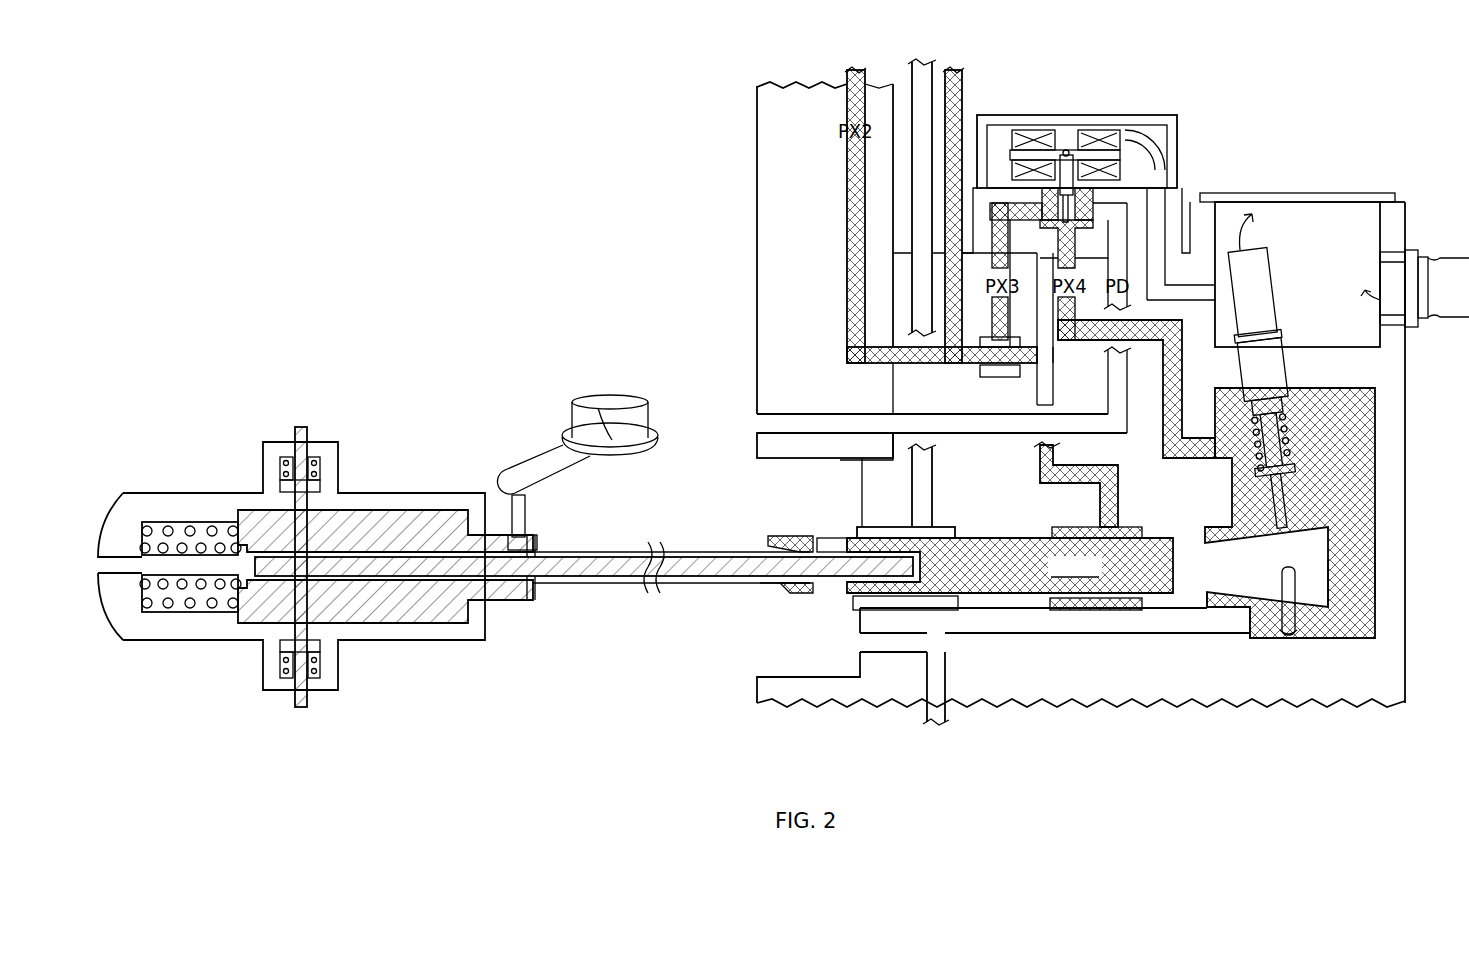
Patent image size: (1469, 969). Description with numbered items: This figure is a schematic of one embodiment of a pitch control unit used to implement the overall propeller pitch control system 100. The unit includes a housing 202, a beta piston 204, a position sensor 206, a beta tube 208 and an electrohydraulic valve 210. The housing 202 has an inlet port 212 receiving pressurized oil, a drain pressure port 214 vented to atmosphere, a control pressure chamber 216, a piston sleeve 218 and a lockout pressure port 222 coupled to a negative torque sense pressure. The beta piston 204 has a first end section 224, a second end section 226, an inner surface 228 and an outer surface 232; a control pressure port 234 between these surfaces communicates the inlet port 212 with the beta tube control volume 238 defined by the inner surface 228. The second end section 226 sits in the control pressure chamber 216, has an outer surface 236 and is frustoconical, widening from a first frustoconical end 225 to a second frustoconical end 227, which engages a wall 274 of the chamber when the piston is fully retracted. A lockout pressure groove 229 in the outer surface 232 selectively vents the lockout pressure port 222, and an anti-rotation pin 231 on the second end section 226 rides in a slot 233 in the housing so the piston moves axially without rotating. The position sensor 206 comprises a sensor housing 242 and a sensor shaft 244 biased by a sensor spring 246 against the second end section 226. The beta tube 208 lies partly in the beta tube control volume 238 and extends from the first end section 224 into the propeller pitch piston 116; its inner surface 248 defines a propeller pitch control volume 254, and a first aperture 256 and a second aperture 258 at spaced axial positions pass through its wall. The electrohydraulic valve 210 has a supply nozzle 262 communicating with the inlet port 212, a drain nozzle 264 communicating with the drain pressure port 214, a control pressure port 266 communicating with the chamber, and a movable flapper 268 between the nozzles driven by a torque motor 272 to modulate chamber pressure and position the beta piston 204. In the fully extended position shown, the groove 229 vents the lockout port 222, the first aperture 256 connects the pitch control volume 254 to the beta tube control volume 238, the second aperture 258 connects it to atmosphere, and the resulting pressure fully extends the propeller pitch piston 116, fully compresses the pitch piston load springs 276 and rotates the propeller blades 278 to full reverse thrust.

The propeller pitch control system 100 is at (344, 115).
The propeller pitch piston 116 is at (316, 567).
The housing 202 is at (757, 152).
The beta piston 204 is at (1030, 630).
The position sensor 206 is at (1334, 250).
The beta tube 208 is at (732, 619).
The electrohydraulic valve 210 is at (1163, 185).
The inlet port 212 is at (868, 365).
The drain pressure port 214 is at (795, 413).
The control pressure chamber 216 is at (1363, 495).
The piston sleeve 218 is at (977, 525).
The lockout pressure port 222 is at (912, 192).
The first end section 224 is at (845, 643).
The first frustoconical end 225 is at (1208, 612).
The second end section 226 is at (1219, 653).
The second frustoconical end 227 is at (1328, 612).
The inner surface 228 is at (1157, 535).
The lockout pressure groove 229 is at (897, 527).
The anti-rotation pin 231 is at (1280, 575).
The outer surface 232 is at (1153, 625).
The slot 233 is at (1293, 650).
The control pressure port 234 is at (1095, 538).
The outer surface 236 is at (1315, 520).
The beta tube control volume 238 is at (1010, 565).
The sensor housing 242 is at (1272, 300).
The sensor shaft 244 is at (1285, 455).
The sensor spring 246 is at (1296, 425).
The inner surface 248 is at (605, 552).
The propeller pitch control volume 254 is at (690, 560).
The first aperture 256 is at (830, 540).
The second aperture 258 is at (800, 540).
The supply nozzle 262 is at (1047, 215).
The drain nozzle 264 is at (1120, 135).
The control pressure port 266 is at (1072, 248).
The movable flapper 268 is at (1080, 215).
The torque motor 272 is at (1199, 139).
The wall 274 is at (1370, 568).
The pitch piston load springs 276 is at (165, 525).
The propeller blades 278 is at (569, 445).